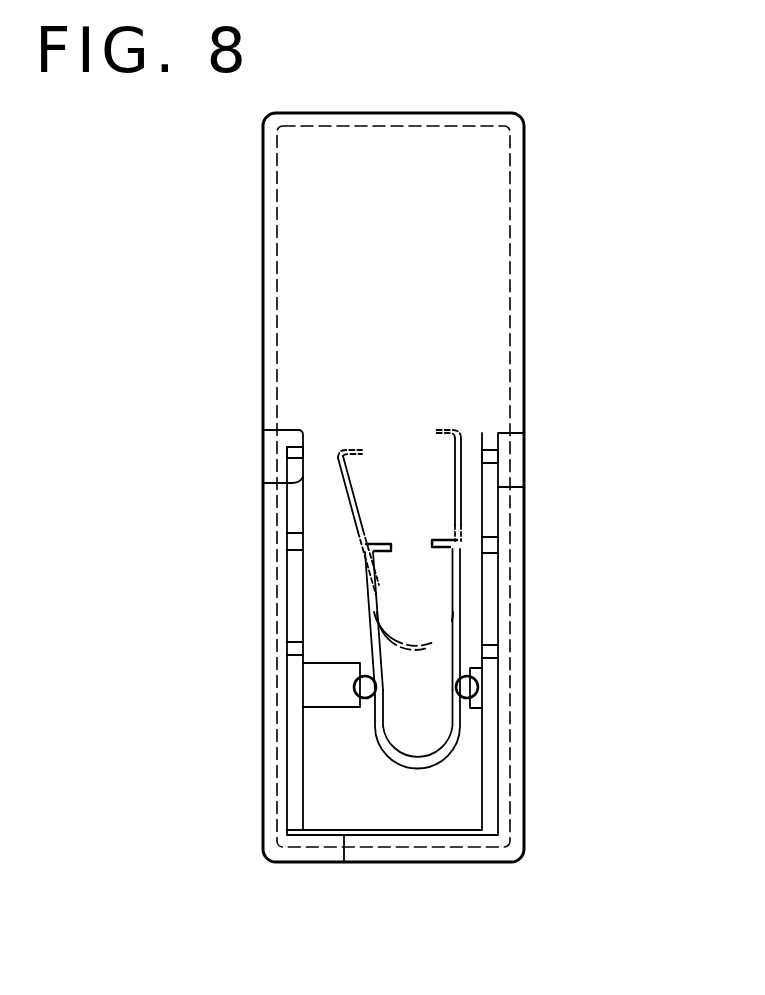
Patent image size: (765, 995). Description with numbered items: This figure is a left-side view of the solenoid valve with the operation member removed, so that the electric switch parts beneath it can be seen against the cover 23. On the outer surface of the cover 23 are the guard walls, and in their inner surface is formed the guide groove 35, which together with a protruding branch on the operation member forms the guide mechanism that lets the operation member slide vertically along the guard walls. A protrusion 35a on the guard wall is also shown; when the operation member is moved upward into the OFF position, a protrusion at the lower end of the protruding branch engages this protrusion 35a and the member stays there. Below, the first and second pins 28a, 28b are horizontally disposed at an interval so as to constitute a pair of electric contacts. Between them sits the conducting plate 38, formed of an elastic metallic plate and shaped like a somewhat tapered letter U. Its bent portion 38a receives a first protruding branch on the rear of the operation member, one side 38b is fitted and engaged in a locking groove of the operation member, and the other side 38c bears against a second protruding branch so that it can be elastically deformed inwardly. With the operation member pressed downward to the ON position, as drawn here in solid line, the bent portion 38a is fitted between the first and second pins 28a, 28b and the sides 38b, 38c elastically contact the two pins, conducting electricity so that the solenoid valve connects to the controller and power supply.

The cover 23 is at (497, 247).
The guide groove 35 is at (303, 455).
The protrusion 35a is at (283, 468).
The first pin 28a is at (353, 687).
The second pin 28b is at (478, 690).
The conducting plate 38 is at (387, 615).
The bent portion 38a is at (441, 764).
The side 38b is at (460, 586).
The side 38c is at (378, 612).